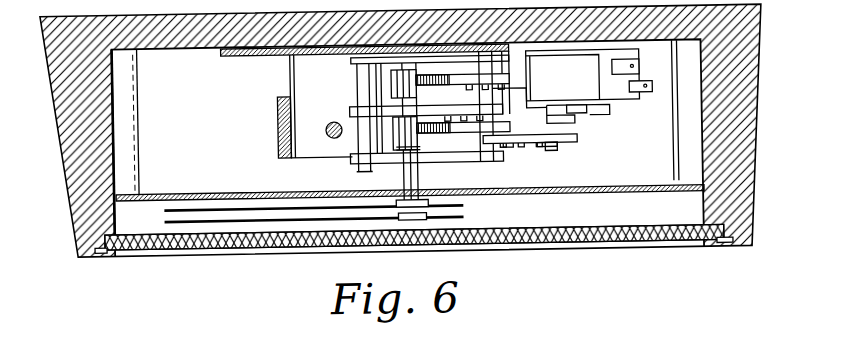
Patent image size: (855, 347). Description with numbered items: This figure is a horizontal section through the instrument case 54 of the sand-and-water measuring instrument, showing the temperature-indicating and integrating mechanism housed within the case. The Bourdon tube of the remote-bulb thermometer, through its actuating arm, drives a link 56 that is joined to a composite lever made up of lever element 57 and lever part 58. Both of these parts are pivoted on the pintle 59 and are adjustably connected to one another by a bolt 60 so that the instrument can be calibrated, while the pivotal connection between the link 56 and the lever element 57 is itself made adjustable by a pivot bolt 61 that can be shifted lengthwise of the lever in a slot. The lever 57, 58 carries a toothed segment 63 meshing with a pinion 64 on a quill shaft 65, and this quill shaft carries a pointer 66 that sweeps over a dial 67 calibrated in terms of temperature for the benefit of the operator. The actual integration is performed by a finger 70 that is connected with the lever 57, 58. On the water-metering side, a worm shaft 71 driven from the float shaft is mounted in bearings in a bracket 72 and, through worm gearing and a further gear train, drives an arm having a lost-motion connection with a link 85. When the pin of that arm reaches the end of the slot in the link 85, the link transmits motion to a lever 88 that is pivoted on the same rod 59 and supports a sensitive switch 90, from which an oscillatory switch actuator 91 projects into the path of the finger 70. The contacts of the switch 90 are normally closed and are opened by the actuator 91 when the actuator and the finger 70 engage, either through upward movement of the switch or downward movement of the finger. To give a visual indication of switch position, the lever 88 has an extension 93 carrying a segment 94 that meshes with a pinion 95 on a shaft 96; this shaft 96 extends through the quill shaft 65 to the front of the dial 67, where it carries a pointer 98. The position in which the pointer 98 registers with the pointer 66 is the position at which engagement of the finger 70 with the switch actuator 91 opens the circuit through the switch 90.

The instrument case 54 is at (743, 163).
The link 56 is at (557, 151).
The lever element 57 is at (578, 143).
The lever part 58 is at (462, 134).
The pintle 59 is at (497, 163).
The bolt 60 is at (510, 147).
The pivot bolt 61 is at (549, 153).
The segment 63 is at (425, 151).
The pinion 64 is at (393, 149).
The quill shaft 65 is at (397, 203).
The pointer 66 is at (217, 205).
The dial 67 is at (160, 204).
The finger 70 is at (532, 109).
The worm shaft 71 is at (331, 122).
The bracket 72 is at (278, 118).
The link 85 is at (592, 113).
The lever 88 is at (627, 105).
The sensitive switch 90 is at (640, 67).
The switch actuator 91 is at (566, 123).
The extension 93 is at (460, 83).
The segment 94 is at (421, 89).
The pinion 95 is at (382, 82).
The shaft 96 is at (402, 97).
The pointer 98 is at (283, 222).